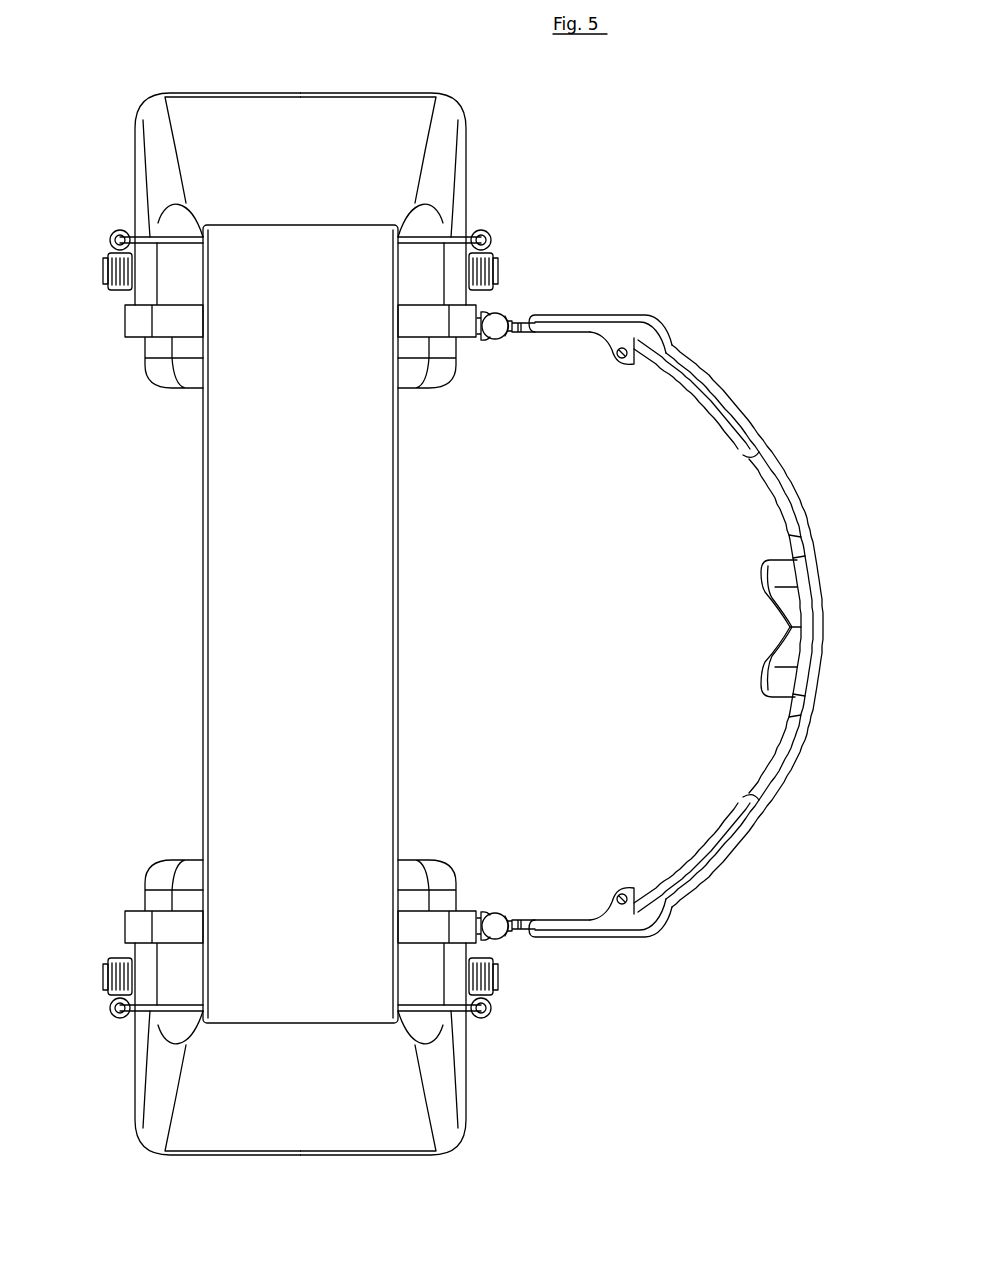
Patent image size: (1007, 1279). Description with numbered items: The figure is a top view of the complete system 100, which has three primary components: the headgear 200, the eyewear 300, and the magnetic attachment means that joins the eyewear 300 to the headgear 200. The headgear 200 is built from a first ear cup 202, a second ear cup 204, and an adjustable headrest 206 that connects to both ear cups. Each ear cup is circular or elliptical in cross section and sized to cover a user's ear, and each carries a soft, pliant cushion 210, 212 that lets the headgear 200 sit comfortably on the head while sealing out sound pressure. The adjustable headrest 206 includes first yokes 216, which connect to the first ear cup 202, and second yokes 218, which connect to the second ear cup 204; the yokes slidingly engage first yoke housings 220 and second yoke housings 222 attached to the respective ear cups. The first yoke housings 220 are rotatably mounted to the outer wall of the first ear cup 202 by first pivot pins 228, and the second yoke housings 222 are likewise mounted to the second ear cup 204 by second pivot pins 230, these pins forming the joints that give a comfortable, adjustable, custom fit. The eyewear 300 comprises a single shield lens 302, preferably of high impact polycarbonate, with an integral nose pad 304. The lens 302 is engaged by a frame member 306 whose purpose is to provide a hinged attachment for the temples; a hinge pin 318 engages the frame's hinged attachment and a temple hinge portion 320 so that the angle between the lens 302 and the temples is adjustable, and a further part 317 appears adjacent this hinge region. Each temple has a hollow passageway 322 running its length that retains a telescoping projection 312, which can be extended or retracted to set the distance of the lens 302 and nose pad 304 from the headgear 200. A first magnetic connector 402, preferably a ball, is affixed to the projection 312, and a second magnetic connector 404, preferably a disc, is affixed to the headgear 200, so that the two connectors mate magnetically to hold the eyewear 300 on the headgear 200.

The system 100 is at (795, 134).
The headgear 200 is at (534, 1018).
The first ear cup 202 is at (463, 192).
The second ear cup 204 is at (455, 1050).
The adjustable headrest 206 is at (224, 466).
The cushion 210 is at (126, 365).
The cushion 212 is at (156, 868).
The first yokes 216 is at (150, 240).
The second yokes 218 is at (126, 1012).
The first yoke housings 220 is at (104, 270).
The second yoke housings 222 is at (104, 978).
The first pivot pins 228 is at (110, 250).
The second pivot pins 230 is at (108, 996).
The eyewear 300 is at (813, 412).
The lens 302 is at (795, 504).
The nose pad 304 is at (772, 556).
The frame member 306 is at (652, 320).
The projection 312 is at (526, 334).
The upper hinge bracket 317 is at (617, 368).
The hinge pin 318 is at (617, 886).
The temple hinge portion 320 is at (630, 378).
The hollow passageway 322 is at (675, 328).
The first magnetic connector 402 is at (489, 338).
The second magnetic connector 404 is at (484, 338).